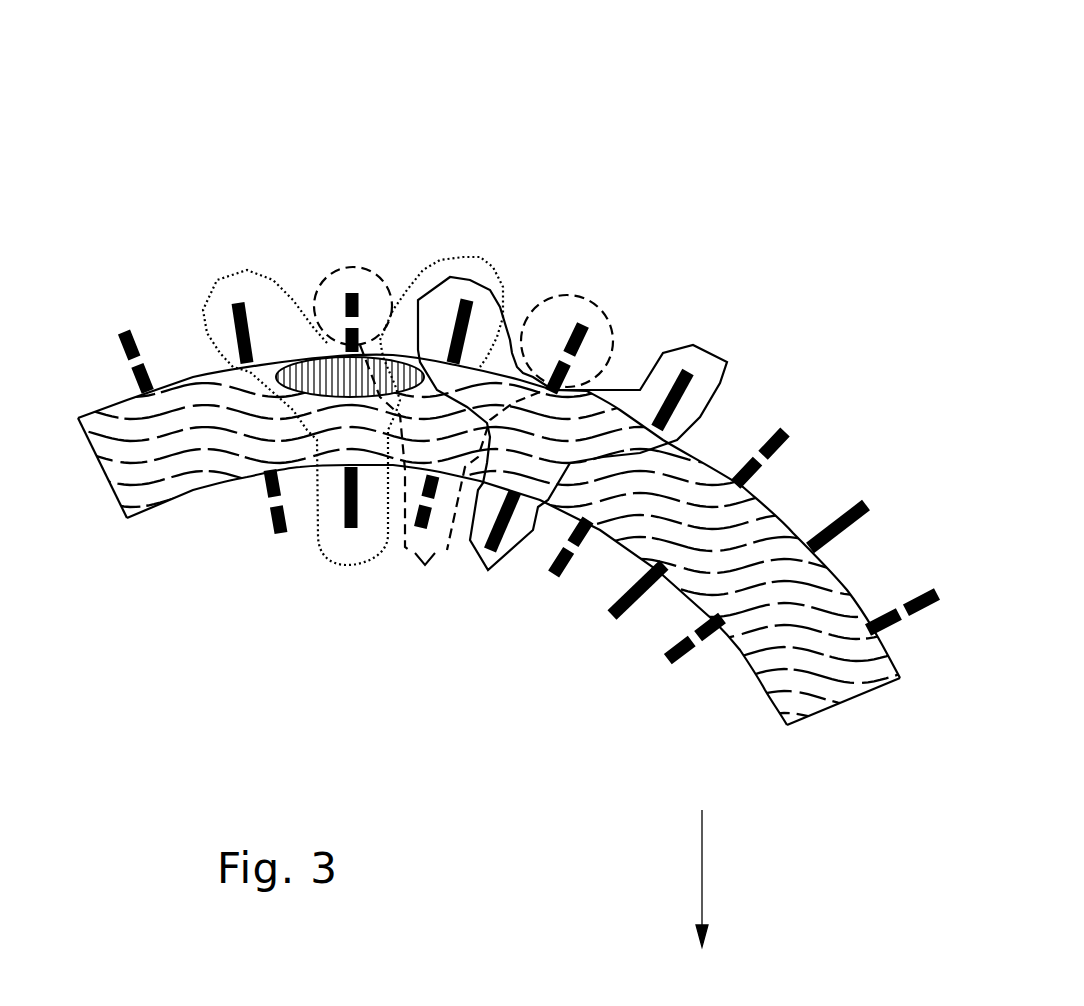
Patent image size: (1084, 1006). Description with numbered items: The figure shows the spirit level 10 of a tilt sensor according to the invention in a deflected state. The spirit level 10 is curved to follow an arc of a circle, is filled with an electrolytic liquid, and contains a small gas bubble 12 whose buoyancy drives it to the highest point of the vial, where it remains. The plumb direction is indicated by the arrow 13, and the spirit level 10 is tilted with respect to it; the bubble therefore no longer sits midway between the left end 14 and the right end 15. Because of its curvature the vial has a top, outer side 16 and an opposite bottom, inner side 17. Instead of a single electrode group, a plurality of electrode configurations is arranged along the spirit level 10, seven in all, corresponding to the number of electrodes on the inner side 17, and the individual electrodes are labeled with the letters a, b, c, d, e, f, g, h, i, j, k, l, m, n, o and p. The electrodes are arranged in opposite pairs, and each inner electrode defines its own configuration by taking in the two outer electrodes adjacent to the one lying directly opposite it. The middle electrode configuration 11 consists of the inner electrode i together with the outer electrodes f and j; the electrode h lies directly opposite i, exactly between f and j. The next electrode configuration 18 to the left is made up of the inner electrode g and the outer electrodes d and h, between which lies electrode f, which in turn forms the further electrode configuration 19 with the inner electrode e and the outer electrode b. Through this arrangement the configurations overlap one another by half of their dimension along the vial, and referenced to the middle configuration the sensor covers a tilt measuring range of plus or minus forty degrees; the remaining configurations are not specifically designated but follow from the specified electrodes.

The spirit level 10 is at (224, 122).
The electrode configuration 11 is at (683, 360).
The gas bubble 12 is at (405, 356).
The arrow 13 is at (702, 868).
The left end 14 is at (113, 490).
The right end 15 is at (838, 708).
The outer side 16 is at (777, 517).
The inner side 17 is at (167, 502).
The electrode configuration 18 is at (356, 292).
The electrode configuration 19 is at (246, 287).
The electrode a is at (128, 330).
The electrode b is at (230, 297).
The electrode c is at (280, 537).
The electrode d is at (343, 277).
The electrode e is at (350, 530).
The electrode f is at (465, 298).
The electrode g is at (427, 535).
The electrode h is at (583, 330).
The electrode i is at (486, 560).
The electrode j is at (690, 370).
The electrode k is at (557, 575).
The electrode l is at (783, 430).
The electrode m is at (613, 613).
The electrode n is at (867, 503).
The electrode o is at (665, 660).
The electrode p is at (930, 597).